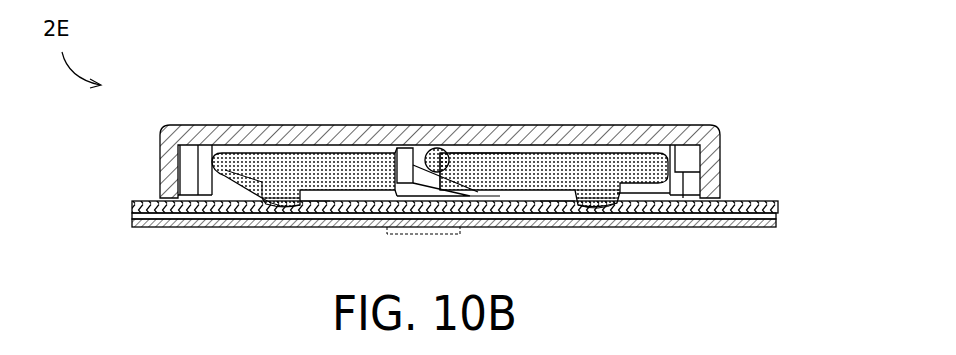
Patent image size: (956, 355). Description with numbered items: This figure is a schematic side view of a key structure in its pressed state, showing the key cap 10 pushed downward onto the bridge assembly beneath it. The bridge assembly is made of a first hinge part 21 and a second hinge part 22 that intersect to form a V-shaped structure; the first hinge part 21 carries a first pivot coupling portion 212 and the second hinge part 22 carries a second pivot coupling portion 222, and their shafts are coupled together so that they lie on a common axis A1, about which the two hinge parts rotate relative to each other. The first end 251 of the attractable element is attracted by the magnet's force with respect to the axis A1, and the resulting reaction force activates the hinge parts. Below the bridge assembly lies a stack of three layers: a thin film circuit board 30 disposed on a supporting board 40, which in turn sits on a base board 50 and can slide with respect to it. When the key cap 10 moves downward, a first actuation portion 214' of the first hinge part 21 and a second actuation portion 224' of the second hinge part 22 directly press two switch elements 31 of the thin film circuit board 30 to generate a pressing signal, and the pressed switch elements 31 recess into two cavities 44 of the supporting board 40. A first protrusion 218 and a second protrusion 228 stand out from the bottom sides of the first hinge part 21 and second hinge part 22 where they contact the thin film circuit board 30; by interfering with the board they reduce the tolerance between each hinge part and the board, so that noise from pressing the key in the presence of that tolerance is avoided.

The key cap 10 is at (697, 126).
The first hinge part 21 is at (304, 192).
The second hinge part 22 is at (650, 160).
The first pivot coupling portion 212 is at (390, 150).
The second pivot coupling portion 222 is at (515, 150).
The first actuation portion 214' is at (266, 142).
The second actuation portion 224' is at (600, 142).
The first protrusion 218 is at (388, 203).
The second protrusion 228 is at (492, 203).
The first end 251 is at (422, 147).
The axis A1 is at (465, 146).
The thin film circuit board 30 is at (782, 202).
The supporting board 40 is at (778, 214).
The base board 50 is at (778, 224).
The switch element 31 is at (250, 212).
The cavity 44 is at (310, 205).